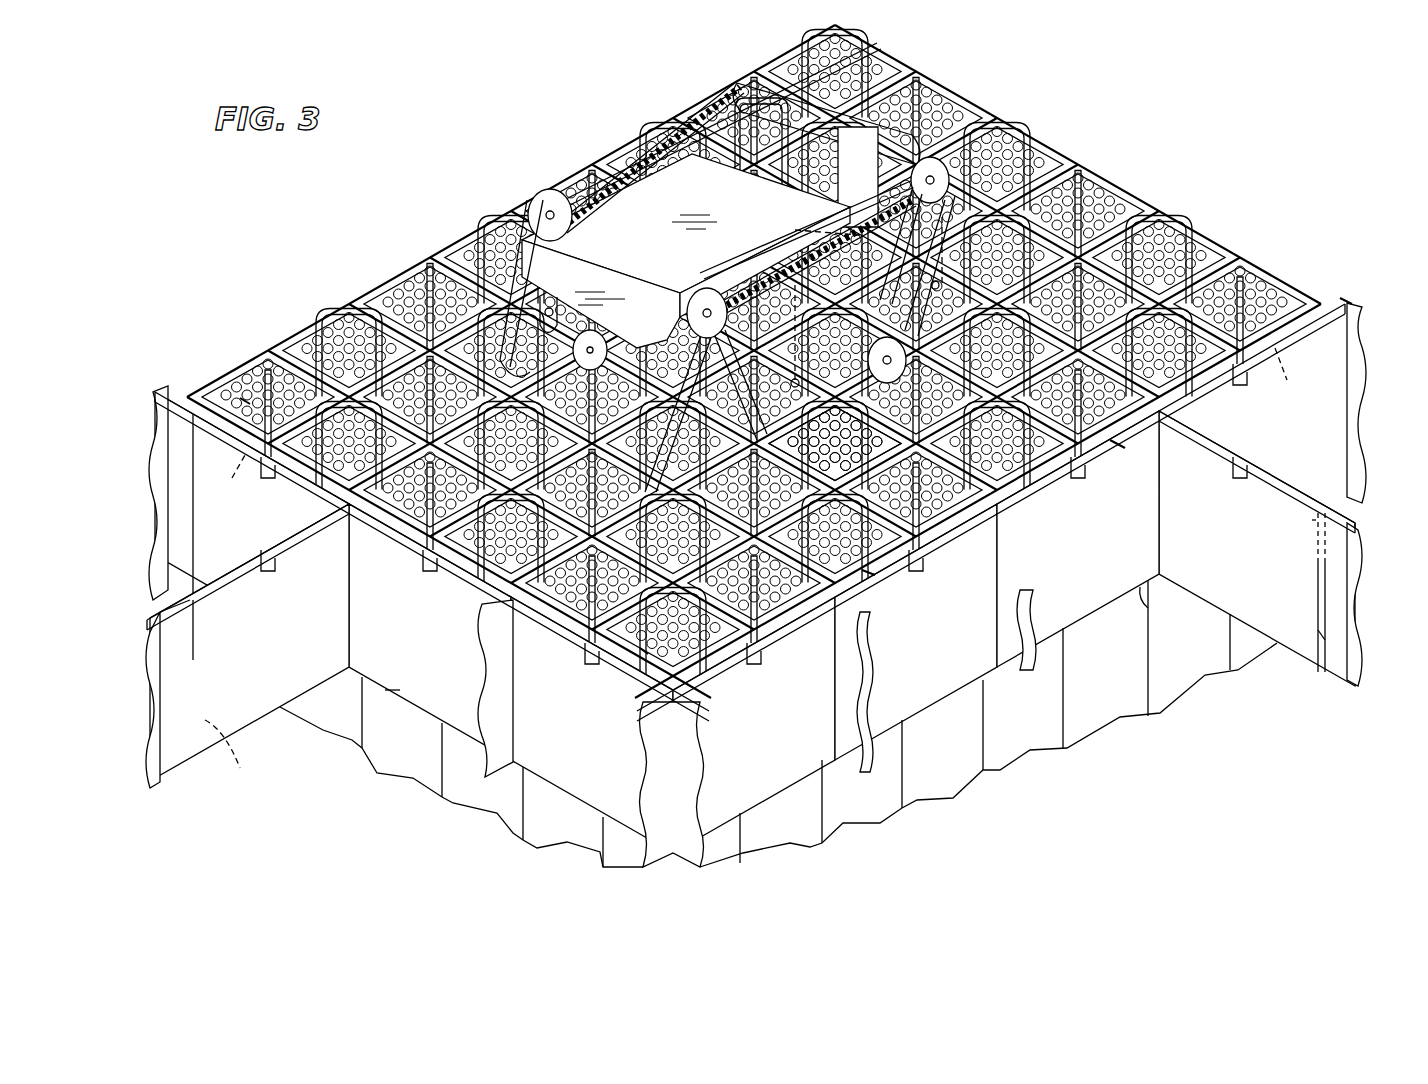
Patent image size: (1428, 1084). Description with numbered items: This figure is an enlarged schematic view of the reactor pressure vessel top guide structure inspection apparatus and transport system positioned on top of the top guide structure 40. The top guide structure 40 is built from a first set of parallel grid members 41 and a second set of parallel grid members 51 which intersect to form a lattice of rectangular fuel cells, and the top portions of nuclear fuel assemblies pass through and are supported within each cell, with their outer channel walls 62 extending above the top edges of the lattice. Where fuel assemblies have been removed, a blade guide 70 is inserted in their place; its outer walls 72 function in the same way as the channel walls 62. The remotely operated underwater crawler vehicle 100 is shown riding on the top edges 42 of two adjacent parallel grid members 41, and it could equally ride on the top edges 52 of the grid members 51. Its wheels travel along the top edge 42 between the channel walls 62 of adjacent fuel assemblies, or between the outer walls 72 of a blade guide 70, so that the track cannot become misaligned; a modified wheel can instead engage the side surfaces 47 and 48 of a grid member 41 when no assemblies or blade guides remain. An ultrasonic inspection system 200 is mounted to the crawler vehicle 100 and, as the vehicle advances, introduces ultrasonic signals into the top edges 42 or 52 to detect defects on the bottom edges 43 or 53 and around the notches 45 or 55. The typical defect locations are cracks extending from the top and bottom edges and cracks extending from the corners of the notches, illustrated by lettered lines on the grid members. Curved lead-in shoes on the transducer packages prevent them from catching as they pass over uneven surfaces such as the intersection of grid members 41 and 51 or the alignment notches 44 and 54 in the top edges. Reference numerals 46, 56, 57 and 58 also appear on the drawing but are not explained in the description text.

The top guide structure 40 is at (800, 350).
The parallel grid members 41 is at (158, 560).
The top edge 42 is at (1341, 298).
The bottom edge 43 is at (1148, 610).
The alignment notch 44 is at (1118, 444).
The notch 45 is at (193, 622).
The hidden connector 46 is at (238, 768).
The side surface 47 is at (1295, 428).
The side surface 48 is at (1272, 332).
The parallel grid members 51 is at (1370, 470).
The top edge 52 is at (243, 401).
The bottom edge 53 is at (388, 692).
The alignment notch 54 is at (262, 478).
The notch 55 is at (1320, 638).
The hidden strip 56 is at (1305, 517).
The wall panel 57 is at (228, 531).
The post 58 is at (266, 388).
The channel walls 62 is at (880, 74).
The blade guide 70 is at (822, 558).
The outer walls 72 is at (868, 572).
The underwater crawler vehicle 100 is at (628, 240).
The ultrasonic inspection system 200 is at (818, 412).